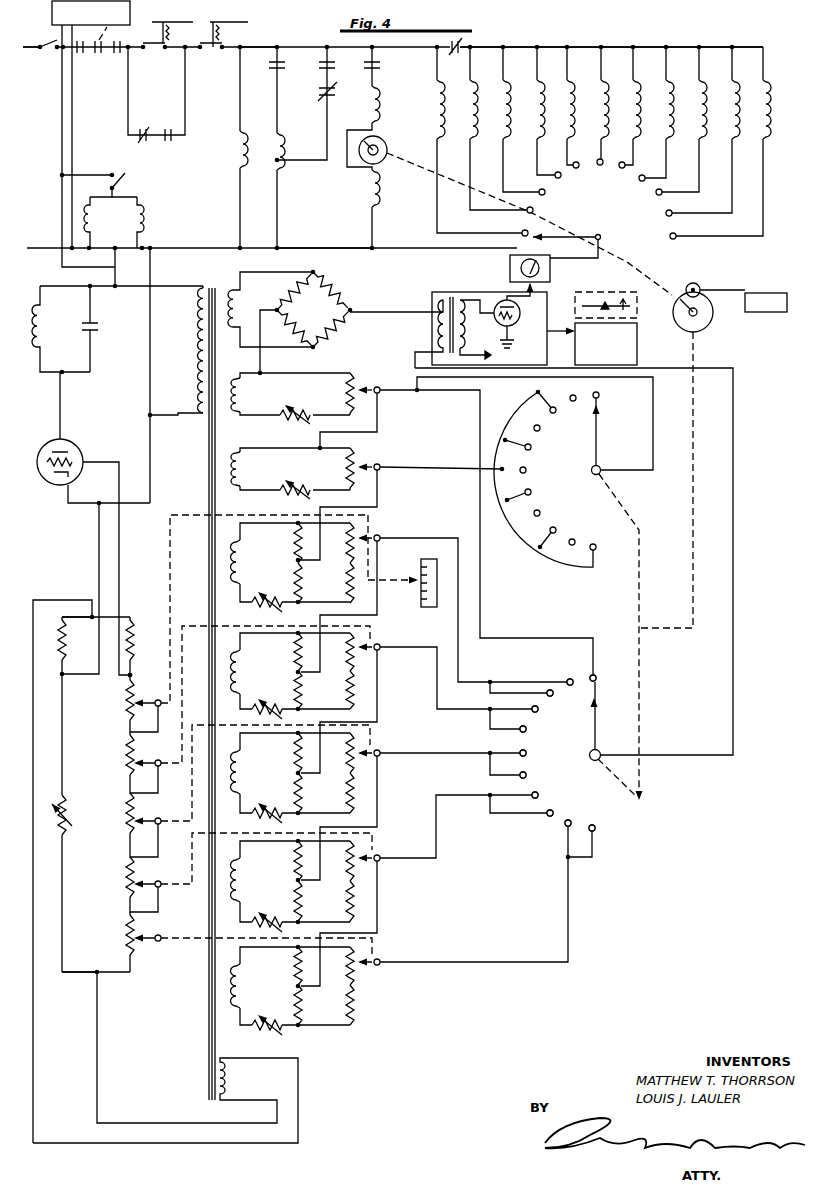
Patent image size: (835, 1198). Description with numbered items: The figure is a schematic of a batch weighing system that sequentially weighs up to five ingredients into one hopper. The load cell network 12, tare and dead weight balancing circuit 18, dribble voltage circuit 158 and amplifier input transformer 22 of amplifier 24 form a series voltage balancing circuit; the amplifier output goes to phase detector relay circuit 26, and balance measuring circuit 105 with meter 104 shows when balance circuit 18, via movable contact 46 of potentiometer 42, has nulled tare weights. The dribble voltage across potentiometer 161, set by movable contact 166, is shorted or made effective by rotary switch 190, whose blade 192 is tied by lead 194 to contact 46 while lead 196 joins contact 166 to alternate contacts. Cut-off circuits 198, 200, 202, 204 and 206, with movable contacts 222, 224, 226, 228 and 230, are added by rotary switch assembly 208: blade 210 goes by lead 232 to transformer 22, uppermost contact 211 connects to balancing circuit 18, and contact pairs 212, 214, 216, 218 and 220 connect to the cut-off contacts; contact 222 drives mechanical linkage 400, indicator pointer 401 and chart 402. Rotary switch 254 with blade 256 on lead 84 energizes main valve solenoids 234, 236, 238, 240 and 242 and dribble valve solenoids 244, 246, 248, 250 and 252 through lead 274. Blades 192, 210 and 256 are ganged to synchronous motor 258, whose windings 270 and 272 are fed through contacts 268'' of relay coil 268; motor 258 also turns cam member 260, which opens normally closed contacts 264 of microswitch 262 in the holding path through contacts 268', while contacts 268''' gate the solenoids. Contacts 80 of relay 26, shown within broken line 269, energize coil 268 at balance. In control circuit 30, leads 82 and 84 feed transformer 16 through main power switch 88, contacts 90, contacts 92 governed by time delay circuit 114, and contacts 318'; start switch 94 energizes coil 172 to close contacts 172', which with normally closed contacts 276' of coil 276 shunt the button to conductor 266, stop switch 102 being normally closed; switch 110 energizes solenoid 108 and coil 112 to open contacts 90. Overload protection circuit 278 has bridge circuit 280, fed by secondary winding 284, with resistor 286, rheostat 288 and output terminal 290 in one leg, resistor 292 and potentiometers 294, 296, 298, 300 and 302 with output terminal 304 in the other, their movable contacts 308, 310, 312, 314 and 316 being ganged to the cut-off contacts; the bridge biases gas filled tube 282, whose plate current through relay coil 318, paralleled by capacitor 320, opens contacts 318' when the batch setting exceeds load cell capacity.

The load cell network 12 is at (320, 304).
The transformer 16 is at (208, 286).
The tare and dead weight balancing circuit 18 is at (270, 401).
The amplifier input transformer 22 is at (440, 308).
The amplifier 24 is at (475, 293).
The phase detector relay circuit 26 is at (638, 351).
The control circuit 30 is at (311, 213).
The balance circuit potentiometer 42 is at (350, 386).
The movable contact 46 is at (372, 386).
The relay contacts 80 is at (275, 70).
The power supply lead 82 is at (33, 52).
The power supply lead 84 is at (45, 247).
The main power switch 88 is at (46, 40).
The relay contacts 90 is at (80, 55).
The relay contacts 92 is at (117, 55).
The push button start switch 94 is at (150, 55).
The push button stop switch 102 is at (212, 55).
The meter 104 is at (510, 268).
The balance measuring circuit 105 is at (551, 262).
The solenoid 108 is at (144, 221).
The switch 110 is at (128, 180).
The relay coil 112 is at (90, 228).
The time delay circuit 114 is at (131, 15).
The dribble voltage circuit 158 is at (280, 476).
The potentiometer 161 is at (352, 463).
The movable contact 166 is at (380, 464).
The relay coil 172 is at (220, 147).
The relay contacts 172' is at (164, 153).
The rotary switch 190 is at (583, 478).
The movable switch blade 192 is at (598, 447).
The lead 194 is at (654, 421).
The lead 196 is at (444, 467).
The cut-off circuit 198 is at (280, 572).
The cut-off circuit 200 is at (280, 679).
The cut-off circuit 202 is at (280, 780).
The cut-off circuit 204 is at (280, 888).
The cut-off circuit 206 is at (280, 993).
The rotary switch assembly 208 is at (580, 763).
The movable switch blade 210 is at (597, 716).
The uppermost contact 211 is at (592, 676).
The pair of contacts 212 is at (566, 681).
The pair of contacts 214 is at (520, 731).
The pair of contacts 216 is at (520, 777).
The pair of contacts 218 is at (548, 817).
The pair of contacts 220 is at (590, 833).
The movable contact 222 is at (372, 535).
The movable contact 224 is at (372, 645).
The movable contact 226 is at (372, 751).
The movable contact 228 is at (372, 856).
The movable contact 230 is at (372, 960).
The lead 232 is at (735, 703).
The main flow control valve solenoid 234 is at (475, 106).
The main flow control valve solenoid 236 is at (541, 106).
The main flow control valve solenoid 238 is at (606, 106).
The main flow control valve solenoid 240 is at (672, 106).
The main flow control valve solenoid 242 is at (738, 106).
The dribble valve solenoid 244 is at (510, 90).
The dribble valve solenoid 246 is at (574, 90).
The dribble valve solenoid 248 is at (640, 90).
The dribble valve solenoid 250 is at (706, 90).
The dribble valve solenoid 252 is at (770, 92).
The rotary switch 254 is at (630, 217).
The switch blade 256 is at (592, 257).
The synchronous motor 258 is at (362, 160).
The cam member 260 is at (708, 325).
The microswitch 262 is at (777, 313).
The normally closed contacts 264 is at (332, 94).
The conductor 266 is at (278, 45).
The relay coil 268 is at (300, 151).
The relay contacts 268' is at (305, 104).
The relay contacts 268'' is at (393, 66).
The relay contacts 268''' is at (430, 43).
The broken line 269 is at (600, 293).
The motor winding 270 is at (365, 111).
The motor winding 272 is at (368, 201).
The lead 274 is at (631, 46).
The relay coil 276 is at (460, 140).
The normally closed contacts 276' is at (141, 103).
The overload protection circuit 278 is at (49, 590).
The bridge circuit 280 is at (110, 883).
The gas filled tube 282 is at (70, 441).
The secondary winding 284 is at (231, 1083).
The fixed resistor 286 is at (66, 650).
The rheostat 288 is at (69, 812).
The output terminal 290 is at (60, 679).
The fixed resistor 292 is at (136, 643).
The potentiometer 294 is at (125, 713).
The potentiometer 296 is at (126, 773).
The potentiometer 298 is at (126, 829).
The potentiometer 300 is at (126, 894).
The potentiometer 302 is at (126, 946).
The output terminal 304 is at (127, 679).
The movable contact 308 is at (160, 700).
The movable contact 310 is at (160, 760).
The movable contact 312 is at (160, 818).
The movable contact 314 is at (160, 881).
The movable contact 316 is at (160, 935).
The relay coil 318 is at (50, 320).
The normally closed contacts 318' is at (110, 61).
The capacitor 320 is at (97, 324).
The mechanical linkage 400 is at (370, 557).
The indicator pointer 401 is at (412, 586).
The chart 402 is at (434, 607).